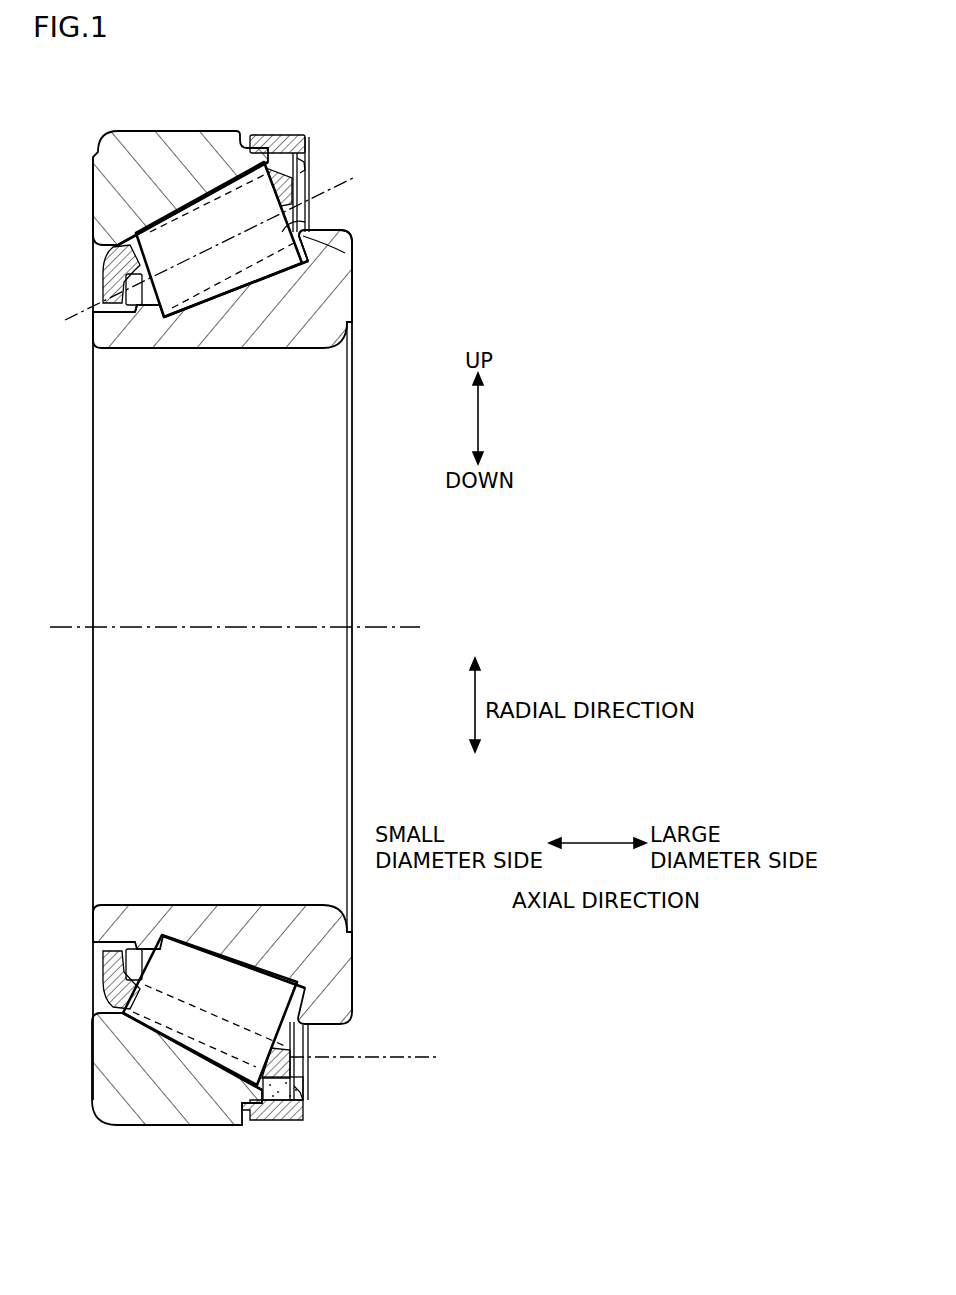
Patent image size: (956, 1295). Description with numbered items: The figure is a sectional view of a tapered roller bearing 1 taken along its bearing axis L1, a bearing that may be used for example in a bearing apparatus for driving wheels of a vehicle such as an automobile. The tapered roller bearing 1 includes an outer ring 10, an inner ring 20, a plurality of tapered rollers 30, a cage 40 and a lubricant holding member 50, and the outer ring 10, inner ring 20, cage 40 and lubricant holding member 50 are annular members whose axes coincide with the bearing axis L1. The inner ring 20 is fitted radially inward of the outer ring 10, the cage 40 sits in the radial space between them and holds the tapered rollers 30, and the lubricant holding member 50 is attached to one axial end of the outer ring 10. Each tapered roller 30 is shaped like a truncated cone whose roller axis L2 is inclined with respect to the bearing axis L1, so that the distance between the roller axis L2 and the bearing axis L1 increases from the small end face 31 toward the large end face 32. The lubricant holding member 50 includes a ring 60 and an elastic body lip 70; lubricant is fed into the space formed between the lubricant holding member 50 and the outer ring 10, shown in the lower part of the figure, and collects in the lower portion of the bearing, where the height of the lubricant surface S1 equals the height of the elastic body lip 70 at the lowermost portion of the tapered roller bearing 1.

The tapered roller bearing 1 is at (459, 133).
The outer ring 10 is at (128, 137).
The inner ring 20 is at (344, 297).
The tapered roller 30 is at (231, 253).
The small end face 31 is at (147, 310).
The large end face 32 is at (343, 241).
The cage 40 is at (118, 250).
The lubricant holding member 50 is at (299, 129).
The ring 60 is at (281, 1121).
The elastic body lip 70 is at (310, 1084).
The bearing axis L1 is at (411, 620).
The roller axis L2 is at (73, 320).
The surface of the lubricant S1 is at (416, 1058).